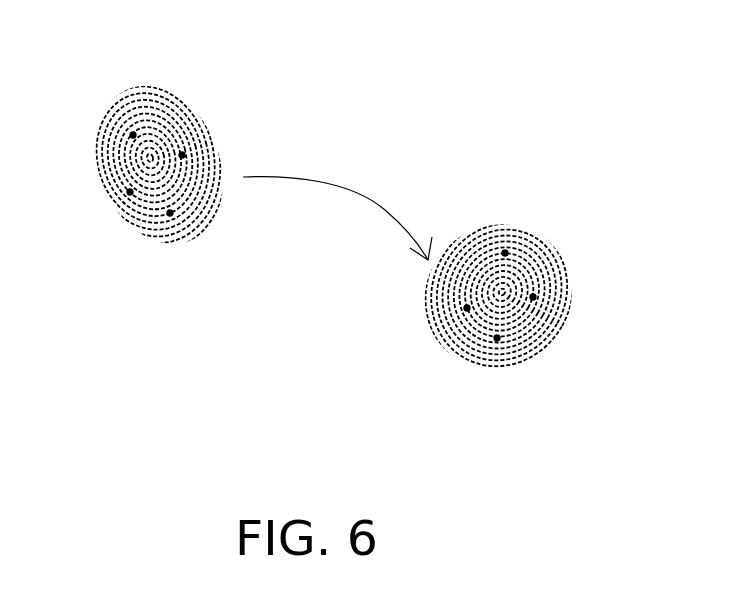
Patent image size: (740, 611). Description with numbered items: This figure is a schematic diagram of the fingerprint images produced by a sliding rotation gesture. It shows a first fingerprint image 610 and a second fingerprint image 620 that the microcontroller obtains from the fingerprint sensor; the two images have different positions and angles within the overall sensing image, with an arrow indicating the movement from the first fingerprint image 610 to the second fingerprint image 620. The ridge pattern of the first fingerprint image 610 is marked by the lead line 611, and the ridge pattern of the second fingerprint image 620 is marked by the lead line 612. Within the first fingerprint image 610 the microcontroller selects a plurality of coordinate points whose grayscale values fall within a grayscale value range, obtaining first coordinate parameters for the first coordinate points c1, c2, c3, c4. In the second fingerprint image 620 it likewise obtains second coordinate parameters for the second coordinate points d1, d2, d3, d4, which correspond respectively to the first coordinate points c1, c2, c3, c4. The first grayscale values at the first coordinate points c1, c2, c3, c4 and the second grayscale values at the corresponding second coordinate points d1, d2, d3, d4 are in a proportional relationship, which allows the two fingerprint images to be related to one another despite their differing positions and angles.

The first fingerprint image 610 is at (97, 50).
The first fingerprint pattern 611 is at (162, 85).
The first coordinate point c1 is at (133, 135).
The first coordinate point c2 is at (182, 155).
The first coordinate point c3 is at (130, 192).
The first coordinate point c4 is at (170, 213).
The second fingerprint image 620 is at (487, 162).
The second fingerprint pattern 612 is at (512, 228).
The second coordinate point d1 is at (505, 253).
The second coordinate point d2 is at (533, 297).
The second coordinate point d3 is at (467, 308).
The second coordinate point d4 is at (497, 338).